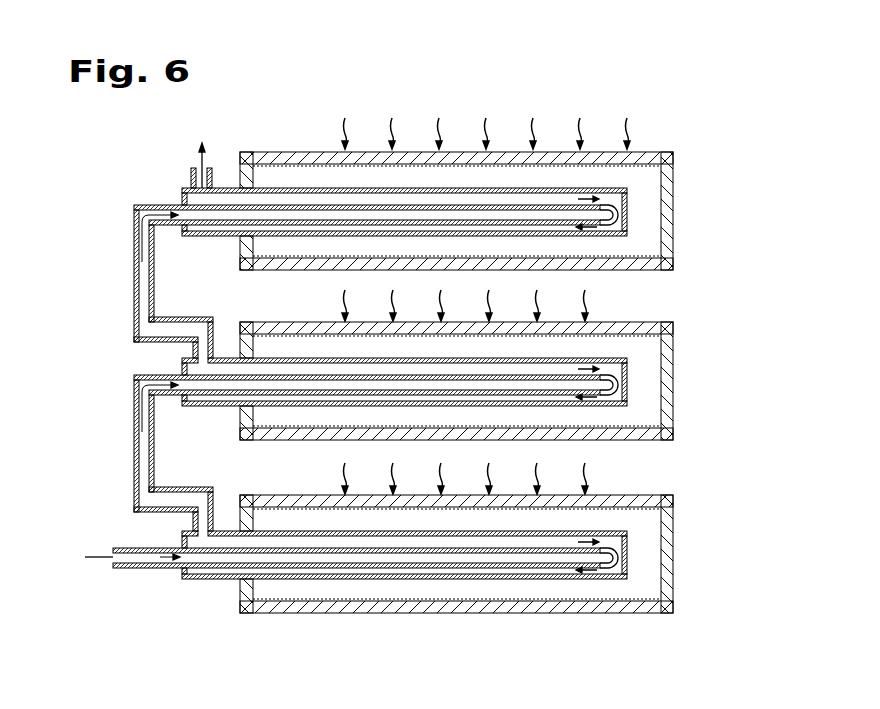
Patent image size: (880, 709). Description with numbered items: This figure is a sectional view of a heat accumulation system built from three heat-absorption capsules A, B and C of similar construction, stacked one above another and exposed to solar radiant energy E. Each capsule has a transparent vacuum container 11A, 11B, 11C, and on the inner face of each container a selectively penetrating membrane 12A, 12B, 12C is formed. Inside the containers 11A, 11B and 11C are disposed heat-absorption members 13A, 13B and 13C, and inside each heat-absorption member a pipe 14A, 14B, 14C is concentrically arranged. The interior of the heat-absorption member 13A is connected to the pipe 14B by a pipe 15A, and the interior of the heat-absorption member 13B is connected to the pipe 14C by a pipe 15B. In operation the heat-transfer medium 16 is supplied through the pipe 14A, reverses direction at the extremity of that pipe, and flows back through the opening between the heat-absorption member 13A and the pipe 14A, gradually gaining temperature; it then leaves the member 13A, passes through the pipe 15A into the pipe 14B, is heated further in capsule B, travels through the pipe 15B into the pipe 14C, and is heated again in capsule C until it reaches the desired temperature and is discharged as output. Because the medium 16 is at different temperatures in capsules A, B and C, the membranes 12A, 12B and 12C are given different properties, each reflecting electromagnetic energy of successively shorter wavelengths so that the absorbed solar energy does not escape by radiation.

The solar energy / radiation E is at (486, 290).
The heat-absorption capsule A is at (732, 542).
The heat-absorption capsule B is at (731, 369).
The heat-absorption capsule C is at (727, 202).
The transparent vacuum container 11A is at (670, 566).
The transparent vacuum container 11B is at (669, 392).
The transparent vacuum container 11C is at (667, 221).
The selectively penetrating membrane 12A is at (654, 509).
The selectively penetrating membrane 12B is at (646, 336).
The selectively penetrating membrane 12C is at (641, 163).
The heat-absorption member 13A is at (291, 532).
The heat-absorption member 13B is at (293, 359).
The heat-absorption member 13C is at (296, 190).
The pipe 14A is at (311, 568).
The pipe 14B is at (258, 399).
The pipe 14C is at (258, 229).
The pipe 15A is at (133, 449).
The pipe 15B is at (133, 290).
The heat-transfer medium 16 is at (98, 558).